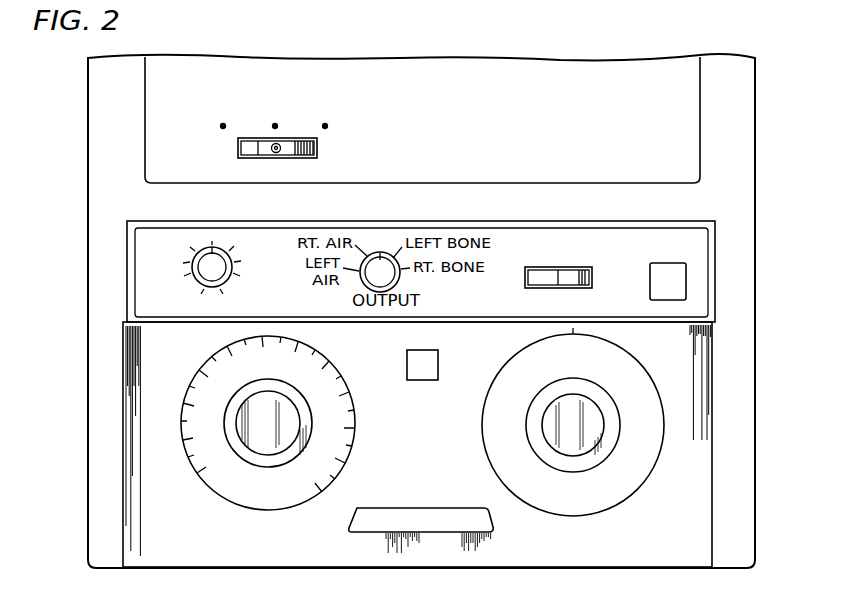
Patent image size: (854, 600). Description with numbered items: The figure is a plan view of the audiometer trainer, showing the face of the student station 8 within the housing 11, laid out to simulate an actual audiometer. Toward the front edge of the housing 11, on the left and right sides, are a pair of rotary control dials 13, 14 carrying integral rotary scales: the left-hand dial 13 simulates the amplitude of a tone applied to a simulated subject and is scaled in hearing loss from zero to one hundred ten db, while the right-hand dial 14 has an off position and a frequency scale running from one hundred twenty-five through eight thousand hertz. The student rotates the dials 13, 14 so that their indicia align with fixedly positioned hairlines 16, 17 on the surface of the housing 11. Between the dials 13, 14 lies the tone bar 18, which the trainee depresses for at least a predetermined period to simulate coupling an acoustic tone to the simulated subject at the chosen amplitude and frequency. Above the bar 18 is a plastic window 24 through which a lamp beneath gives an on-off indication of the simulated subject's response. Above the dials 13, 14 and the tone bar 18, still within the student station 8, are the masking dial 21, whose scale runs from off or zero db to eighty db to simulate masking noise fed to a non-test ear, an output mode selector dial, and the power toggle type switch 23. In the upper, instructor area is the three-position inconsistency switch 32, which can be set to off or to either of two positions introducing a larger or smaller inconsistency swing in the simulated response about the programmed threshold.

The student station 8 is at (150, 421).
The housing 11 is at (757, 221).
The left-hand rotary control dial 13 is at (214, 492).
The right-hand rotary control dial 14 is at (631, 446).
The hairline 16 is at (266, 330).
The hairline 17 is at (572, 334).
The tone bar 18 is at (446, 524).
The masking dial 21 is at (208, 253).
The power toggle type switch 23 is at (578, 276).
The plastic window 24 is at (425, 360).
The three-position switch 32 is at (319, 148).